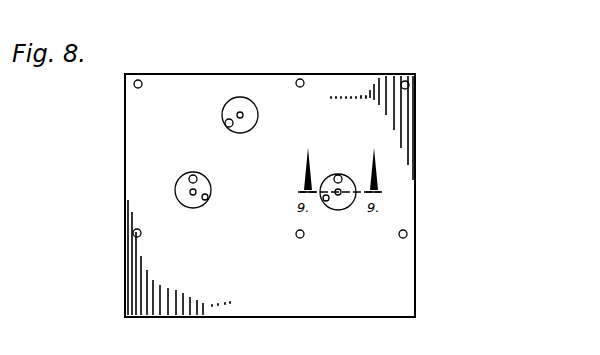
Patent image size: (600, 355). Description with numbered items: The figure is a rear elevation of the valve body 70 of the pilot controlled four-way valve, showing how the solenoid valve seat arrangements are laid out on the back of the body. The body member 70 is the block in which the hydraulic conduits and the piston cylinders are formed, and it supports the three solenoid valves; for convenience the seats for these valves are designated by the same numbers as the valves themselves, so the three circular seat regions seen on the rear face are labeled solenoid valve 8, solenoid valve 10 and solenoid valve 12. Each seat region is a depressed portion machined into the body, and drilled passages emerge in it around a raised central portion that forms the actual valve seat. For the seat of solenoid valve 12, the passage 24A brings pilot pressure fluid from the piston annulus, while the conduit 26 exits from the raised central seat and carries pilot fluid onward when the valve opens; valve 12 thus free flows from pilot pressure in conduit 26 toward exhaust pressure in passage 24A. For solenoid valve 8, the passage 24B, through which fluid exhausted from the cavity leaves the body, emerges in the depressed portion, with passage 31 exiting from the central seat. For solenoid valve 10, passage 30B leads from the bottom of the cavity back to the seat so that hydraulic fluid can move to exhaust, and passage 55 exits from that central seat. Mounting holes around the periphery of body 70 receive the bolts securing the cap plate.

The body member 70 is at (424, 180).
The solenoid valve 12 is at (256, 100).
The conduit 26 is at (241, 111).
The passage 24A is at (231, 127).
The passage 24B is at (193, 175).
The solenoid valve 8 is at (209, 197).
The passage 31 is at (203, 199).
The solenoid valve 10 is at (338, 212).
The passage 30B is at (339, 175).
The passage 55 is at (327, 201).